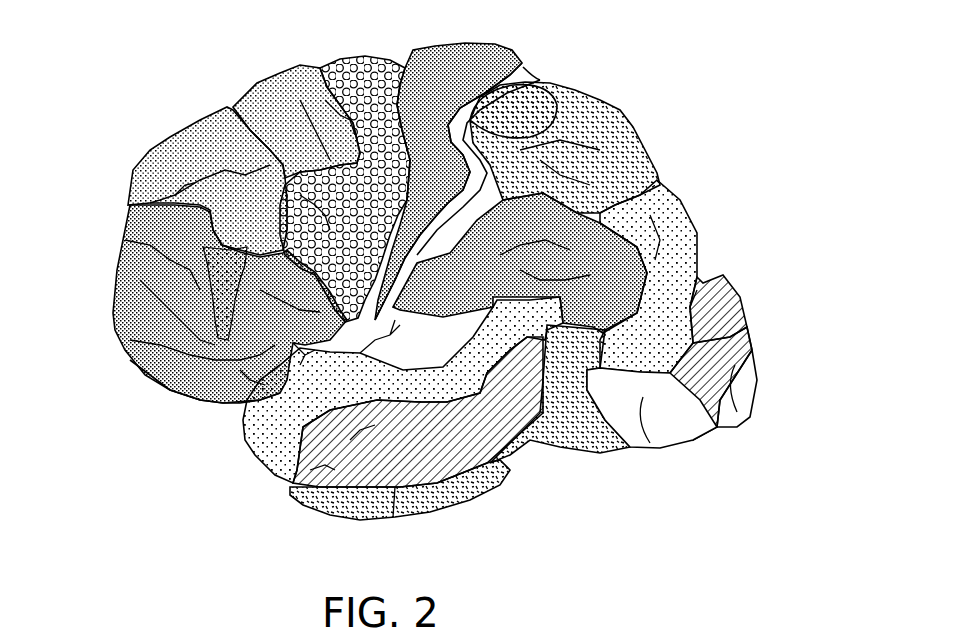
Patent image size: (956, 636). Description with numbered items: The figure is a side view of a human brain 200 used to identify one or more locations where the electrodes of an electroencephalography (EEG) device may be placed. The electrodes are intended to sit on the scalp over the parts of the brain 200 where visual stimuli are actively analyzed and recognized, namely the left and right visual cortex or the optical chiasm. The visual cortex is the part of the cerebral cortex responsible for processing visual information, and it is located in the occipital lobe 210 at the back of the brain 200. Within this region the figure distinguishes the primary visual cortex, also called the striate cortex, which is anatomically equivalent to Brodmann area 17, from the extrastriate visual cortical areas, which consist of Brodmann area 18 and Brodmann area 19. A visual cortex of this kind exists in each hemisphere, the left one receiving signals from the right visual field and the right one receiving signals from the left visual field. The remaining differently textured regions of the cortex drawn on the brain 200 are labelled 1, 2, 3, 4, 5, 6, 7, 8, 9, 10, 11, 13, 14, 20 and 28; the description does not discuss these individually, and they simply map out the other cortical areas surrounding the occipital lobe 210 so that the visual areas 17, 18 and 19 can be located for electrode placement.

The brain 200 is at (727, 67).
The central sulcus 1 is at (537, 77).
The postcentral sulcus line 2 is at (547, 73).
The precentral sulcus line 3 is at (520, 63).
The primary motor cortex 4 is at (457, 45).
The postcentral gyrus region 5 is at (547, 83).
The premotor cortex 6 is at (353, 70).
The somatosensory cortex 7 is at (600, 107).
The frontal eye field region 8 is at (257, 83).
The dorsolateral prefrontal cortex 9 is at (167, 140).
The prefrontal cortex 10 is at (117, 237).
The orbitofrontal cortex 11 is at (160, 390).
The occipital region 13 is at (723, 297).
The parietal cortex region 14 is at (693, 210).
The Brodmann area 17 is at (747, 410).
The Brodmann area 18 is at (663, 450).
The Brodmann area 19 is at (713, 440).
The inferior temporal gyrus 20 is at (437, 500).
The superior temporal region 28 is at (243, 457).
The occipital lobe 210 is at (768, 370).